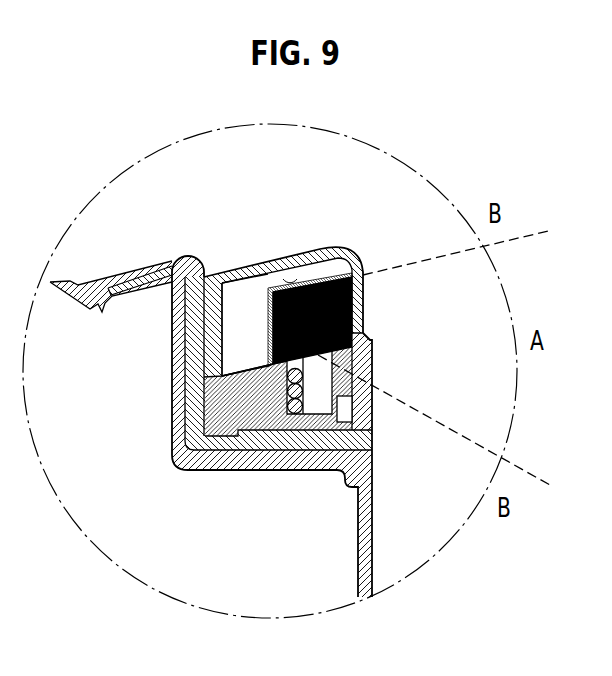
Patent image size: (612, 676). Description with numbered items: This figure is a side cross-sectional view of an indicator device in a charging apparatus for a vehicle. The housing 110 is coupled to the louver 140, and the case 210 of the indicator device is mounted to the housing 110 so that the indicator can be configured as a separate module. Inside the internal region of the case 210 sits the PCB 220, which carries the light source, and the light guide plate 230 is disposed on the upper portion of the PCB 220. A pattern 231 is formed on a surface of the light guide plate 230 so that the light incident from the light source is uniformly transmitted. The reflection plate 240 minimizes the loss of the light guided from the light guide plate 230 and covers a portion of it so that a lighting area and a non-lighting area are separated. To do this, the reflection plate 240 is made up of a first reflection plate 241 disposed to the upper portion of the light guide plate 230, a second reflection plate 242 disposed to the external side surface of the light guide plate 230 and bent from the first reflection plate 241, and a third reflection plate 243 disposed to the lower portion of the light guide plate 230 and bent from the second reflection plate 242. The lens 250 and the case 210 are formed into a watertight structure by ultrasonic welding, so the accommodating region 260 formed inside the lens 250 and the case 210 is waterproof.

The housing 110 is at (270, 400).
The louver 140 is at (111, 270).
The case 210 is at (276, 434).
The PCB 220 is at (311, 441).
The light guide plate 230 is at (365, 320).
The pattern 231 is at (315, 281).
The reflection plate 240 is at (158, 342).
The first reflection plate 241 is at (165, 313).
The second reflection plate 242 is at (188, 348).
The third reflection plate 243 is at (191, 387).
The lens 250 is at (278, 330).
The accommodating region 260 is at (286, 239).